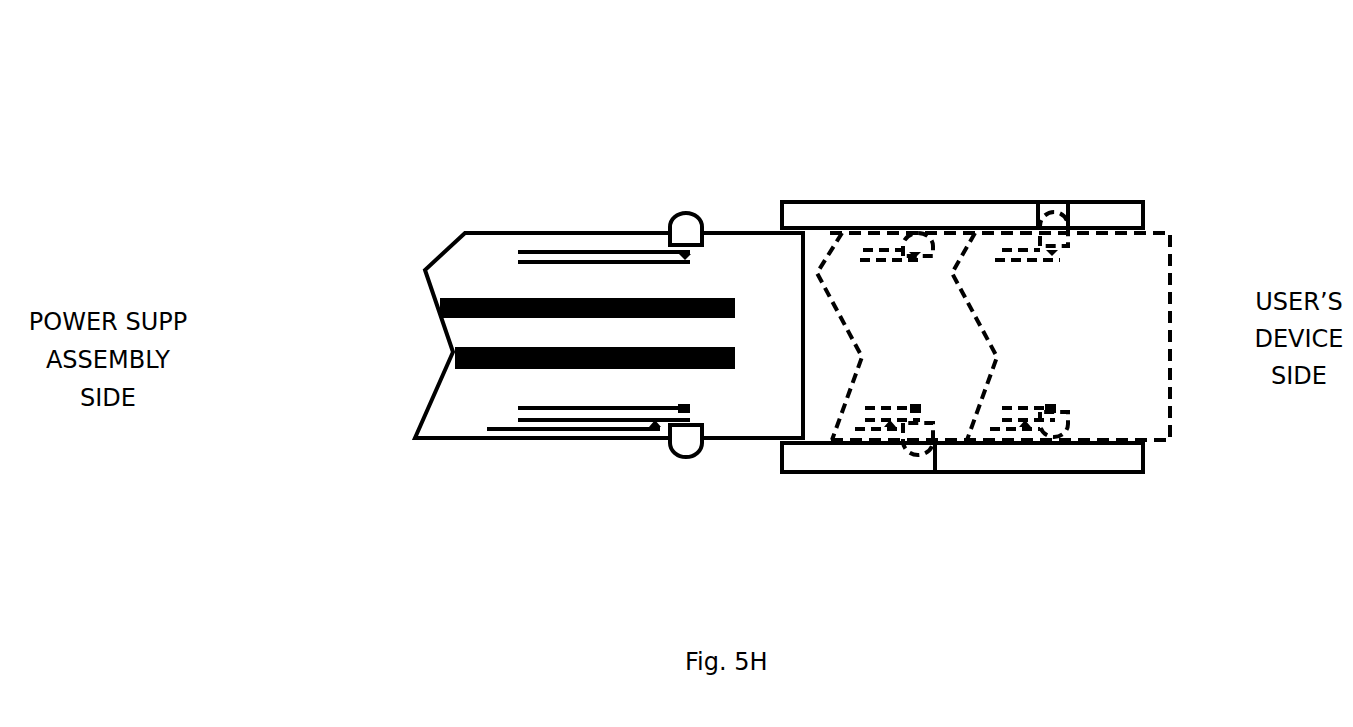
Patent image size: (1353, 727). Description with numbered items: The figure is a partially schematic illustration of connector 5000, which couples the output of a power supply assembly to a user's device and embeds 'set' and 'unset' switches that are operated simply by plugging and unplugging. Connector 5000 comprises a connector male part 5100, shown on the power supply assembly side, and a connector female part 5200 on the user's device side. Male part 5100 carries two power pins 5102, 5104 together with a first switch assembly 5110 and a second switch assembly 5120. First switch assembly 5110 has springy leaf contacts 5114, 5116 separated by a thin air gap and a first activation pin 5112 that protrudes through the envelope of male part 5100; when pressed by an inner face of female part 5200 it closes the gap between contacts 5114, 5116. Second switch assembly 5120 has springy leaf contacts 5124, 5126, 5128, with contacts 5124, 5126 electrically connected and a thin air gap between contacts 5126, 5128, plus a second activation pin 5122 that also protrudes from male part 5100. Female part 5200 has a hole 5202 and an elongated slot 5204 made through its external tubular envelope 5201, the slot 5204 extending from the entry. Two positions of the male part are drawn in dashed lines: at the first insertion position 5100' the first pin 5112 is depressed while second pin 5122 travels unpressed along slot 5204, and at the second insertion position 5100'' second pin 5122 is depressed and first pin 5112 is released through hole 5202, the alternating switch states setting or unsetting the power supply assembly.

The connector 5000 is at (347, 604).
The connector male part 5100 is at (554, 286).
The power pin 5102 is at (438, 307).
The power pin 5104 is at (455, 353).
The first switch assembly 5110 is at (693, 105).
The first activation pin 5112 is at (727, 190).
The springy leaf contact 5114 is at (592, 250).
The springy leaf contact 5116 is at (542, 262).
The second switch assembly 5120 is at (698, 520).
The second activation pin 5122 is at (702, 445).
The springy leaf contact 5124 is at (647, 427).
The springy leaf contact 5126 is at (577, 420).
The springy leaf contact 5128 is at (510, 408).
The connector female part 5200 is at (880, 150).
The external tubular envelope 5201 is at (1117, 207).
The hole 5202 is at (1053, 200).
The elongated slot 5204 is at (860, 473).
The first insertion position 5100' is at (843, 288).
The second insertion position 5100'' is at (988, 292).